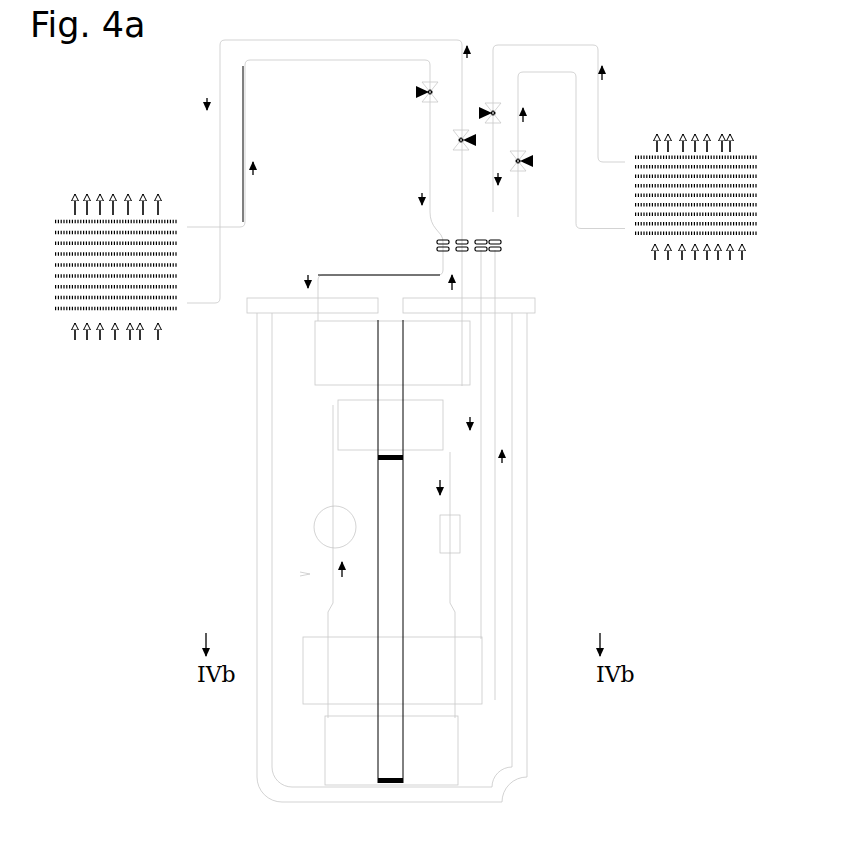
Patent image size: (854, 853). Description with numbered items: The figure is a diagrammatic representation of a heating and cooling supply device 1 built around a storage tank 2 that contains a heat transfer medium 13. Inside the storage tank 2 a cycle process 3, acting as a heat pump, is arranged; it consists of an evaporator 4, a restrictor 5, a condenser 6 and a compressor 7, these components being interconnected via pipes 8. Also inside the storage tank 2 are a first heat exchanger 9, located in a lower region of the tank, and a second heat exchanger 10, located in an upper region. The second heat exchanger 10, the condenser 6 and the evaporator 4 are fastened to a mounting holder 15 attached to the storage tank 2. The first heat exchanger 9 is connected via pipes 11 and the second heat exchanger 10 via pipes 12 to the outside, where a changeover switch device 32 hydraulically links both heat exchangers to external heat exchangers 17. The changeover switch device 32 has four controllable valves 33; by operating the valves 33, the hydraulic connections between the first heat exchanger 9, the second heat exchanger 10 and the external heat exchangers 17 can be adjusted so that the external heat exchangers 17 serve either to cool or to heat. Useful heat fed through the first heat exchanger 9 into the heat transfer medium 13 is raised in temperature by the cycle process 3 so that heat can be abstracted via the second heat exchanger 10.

The heating and cooling supply device 1 is at (553, 33).
The storage tank 2 is at (265, 740).
The cycle process 3 is at (300, 572).
The evaporator 4 is at (430, 748).
The restrictor 5 is at (458, 536).
The condenser 6 is at (365, 428).
The compressor 7 is at (318, 522).
The pipes 8 is at (330, 474).
The first heat exchanger 9 is at (475, 683).
The second heat exchanger 10 is at (455, 348).
The pipes 11 is at (485, 441).
The pipes 12 is at (458, 262).
The heat transfer medium 13 is at (298, 764).
The mounting holder 15 is at (395, 626).
The external heat exchangers 17 is at (152, 320).
The changeover switch device 32 is at (380, 164).
The controllable valves 33 is at (438, 88).